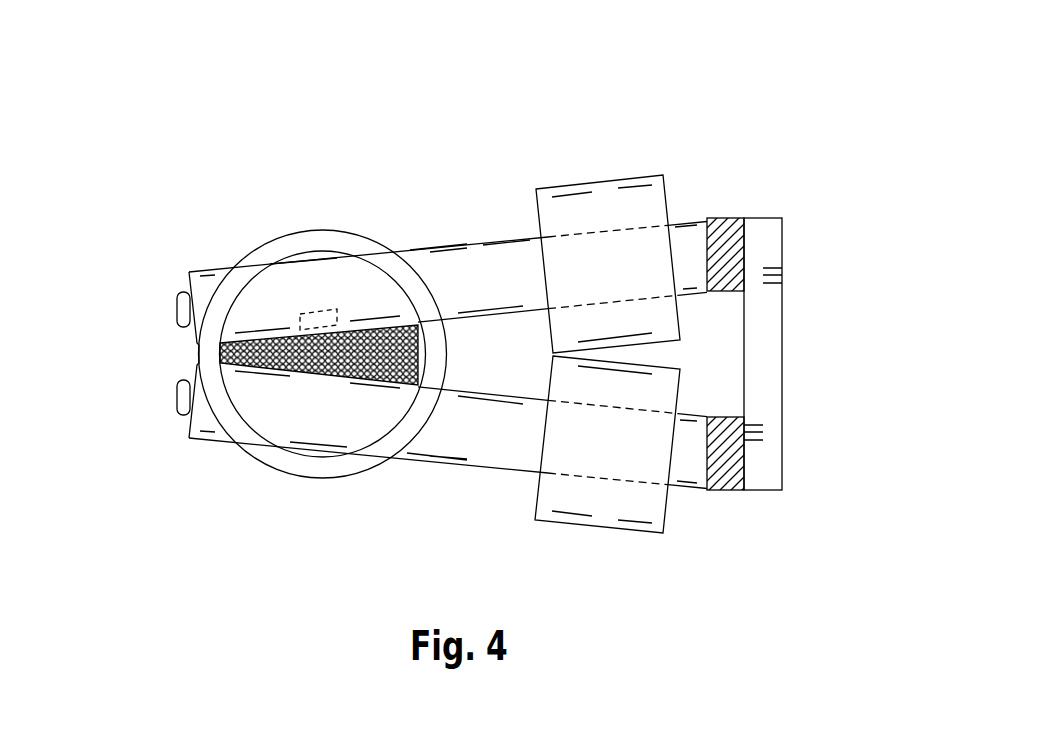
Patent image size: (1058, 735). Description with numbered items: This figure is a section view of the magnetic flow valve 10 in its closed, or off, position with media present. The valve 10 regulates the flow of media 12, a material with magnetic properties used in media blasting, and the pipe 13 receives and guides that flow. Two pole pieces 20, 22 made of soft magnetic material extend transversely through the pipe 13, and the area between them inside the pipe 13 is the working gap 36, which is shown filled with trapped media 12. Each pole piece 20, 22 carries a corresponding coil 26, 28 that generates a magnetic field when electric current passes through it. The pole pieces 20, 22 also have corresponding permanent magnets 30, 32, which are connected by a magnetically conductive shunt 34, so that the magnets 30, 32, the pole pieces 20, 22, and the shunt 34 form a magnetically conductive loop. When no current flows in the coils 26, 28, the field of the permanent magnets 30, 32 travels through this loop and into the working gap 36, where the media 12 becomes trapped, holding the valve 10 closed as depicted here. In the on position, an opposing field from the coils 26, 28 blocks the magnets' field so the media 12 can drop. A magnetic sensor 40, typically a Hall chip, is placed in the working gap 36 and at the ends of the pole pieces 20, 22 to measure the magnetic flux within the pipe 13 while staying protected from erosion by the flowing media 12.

The magnetic flow valve 10 is at (278, 125).
The media 12 is at (362, 340).
The pipe 13 is at (320, 468).
The pole piece 20 is at (477, 258).
The pole piece 22 is at (480, 443).
The coil 26 is at (602, 197).
The coil 28 is at (603, 524).
The permanent magnet 30 is at (727, 218).
The permanent magnet 32 is at (725, 487).
The shunt 34 is at (772, 352).
The working gap 36 is at (300, 372).
The magnetic sensor 40 is at (178, 307).